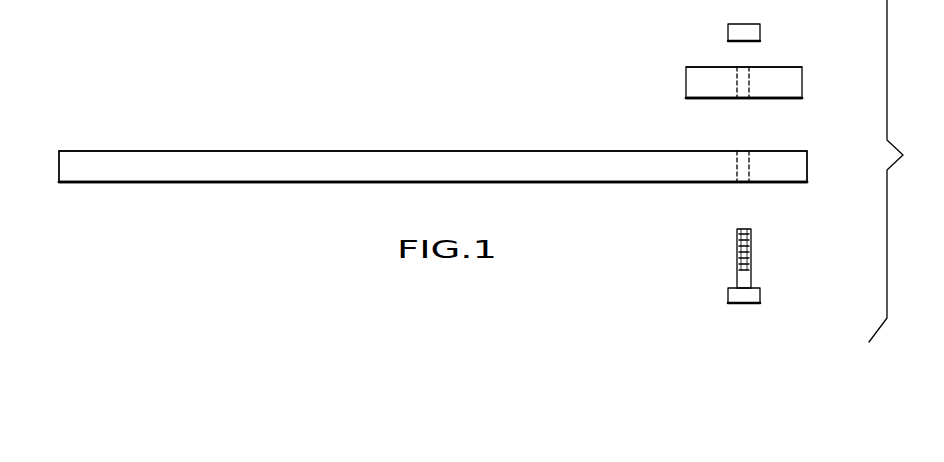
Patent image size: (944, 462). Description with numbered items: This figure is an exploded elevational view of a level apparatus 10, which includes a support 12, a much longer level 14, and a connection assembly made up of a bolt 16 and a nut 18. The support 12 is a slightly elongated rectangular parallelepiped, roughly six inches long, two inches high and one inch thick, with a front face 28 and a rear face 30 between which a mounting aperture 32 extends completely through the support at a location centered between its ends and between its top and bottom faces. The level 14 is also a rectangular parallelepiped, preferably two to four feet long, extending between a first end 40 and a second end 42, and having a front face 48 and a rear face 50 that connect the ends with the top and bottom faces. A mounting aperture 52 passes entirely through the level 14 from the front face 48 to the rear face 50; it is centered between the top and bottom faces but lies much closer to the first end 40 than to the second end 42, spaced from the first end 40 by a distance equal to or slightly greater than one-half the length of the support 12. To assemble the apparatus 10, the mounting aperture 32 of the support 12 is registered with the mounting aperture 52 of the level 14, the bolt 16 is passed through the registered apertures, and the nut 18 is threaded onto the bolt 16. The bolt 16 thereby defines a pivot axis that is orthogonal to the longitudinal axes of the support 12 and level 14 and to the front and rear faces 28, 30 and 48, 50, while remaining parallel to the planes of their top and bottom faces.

The level apparatus 10 is at (278, 96).
The support 12 is at (815, 85).
The level 14 is at (159, 141).
The bolt 16 is at (735, 303).
The nut 18 is at (747, 24).
The front face 28 is at (697, 67).
The rear face 30 is at (700, 98).
The mounting aperture 32 is at (745, 86).
The first end 40 is at (59, 151).
The second end 42 is at (808, 162).
The front face 48 is at (366, 151).
The rear face 50 is at (325, 183).
The mounting aperture 52 is at (737, 183).